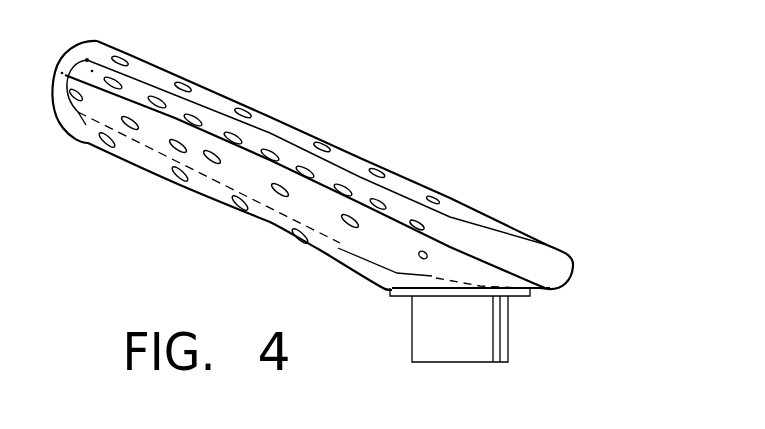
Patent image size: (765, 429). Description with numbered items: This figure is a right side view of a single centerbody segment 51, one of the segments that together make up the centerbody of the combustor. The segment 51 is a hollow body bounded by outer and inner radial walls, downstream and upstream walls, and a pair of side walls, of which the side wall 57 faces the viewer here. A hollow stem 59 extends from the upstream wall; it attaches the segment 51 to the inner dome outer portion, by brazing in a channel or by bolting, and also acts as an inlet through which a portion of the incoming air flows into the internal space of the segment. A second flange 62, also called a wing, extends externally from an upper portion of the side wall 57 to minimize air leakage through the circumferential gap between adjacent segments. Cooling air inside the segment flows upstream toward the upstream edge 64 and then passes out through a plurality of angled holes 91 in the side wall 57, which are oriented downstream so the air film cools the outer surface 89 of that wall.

The centerbody segment 51 is at (409, 171).
The side wall 57 is at (162, 136).
The stem 59 is at (467, 342).
The second flange 62 is at (477, 233).
The upstream edge 64 is at (577, 263).
The outer surface 89 is at (303, 202).
The angled holes 91 is at (251, 105).